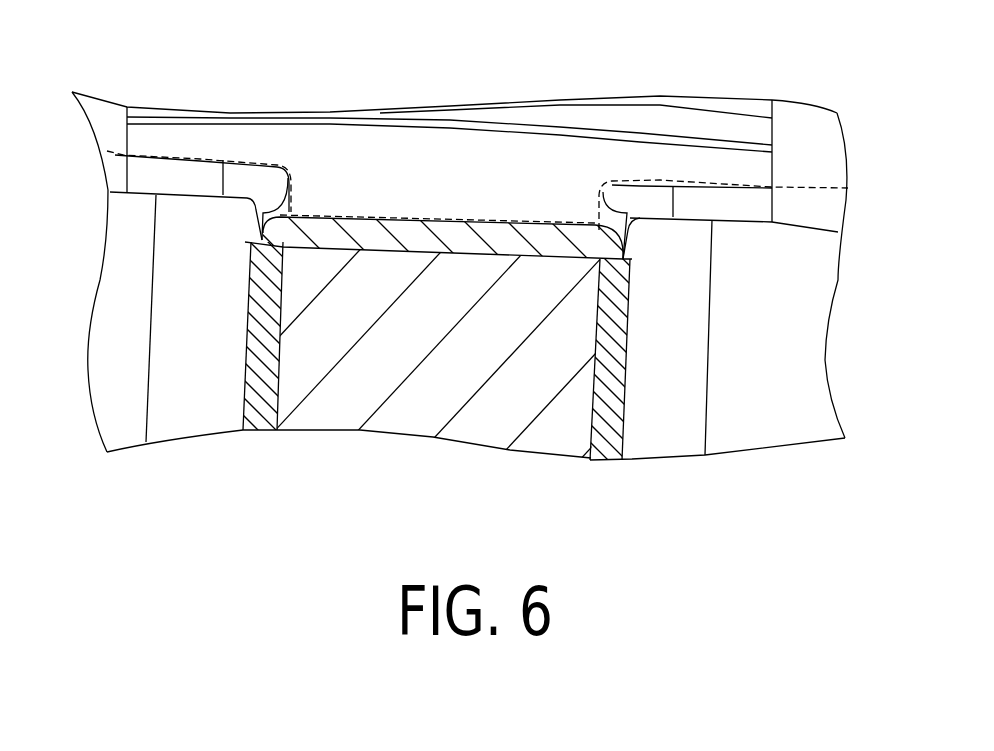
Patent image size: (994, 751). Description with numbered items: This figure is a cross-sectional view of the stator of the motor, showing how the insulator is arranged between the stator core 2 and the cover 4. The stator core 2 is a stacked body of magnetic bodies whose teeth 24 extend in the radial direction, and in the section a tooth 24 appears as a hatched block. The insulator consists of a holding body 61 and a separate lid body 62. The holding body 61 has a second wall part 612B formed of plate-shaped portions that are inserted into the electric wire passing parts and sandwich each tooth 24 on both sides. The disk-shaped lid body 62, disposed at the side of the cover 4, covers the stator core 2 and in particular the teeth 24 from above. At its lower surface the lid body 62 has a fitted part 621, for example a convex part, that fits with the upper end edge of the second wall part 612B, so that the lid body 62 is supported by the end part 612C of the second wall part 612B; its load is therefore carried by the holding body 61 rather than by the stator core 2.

The stator core 2 is at (373, 277).
The cover 4 is at (646, 120).
The teeth 24 is at (403, 413).
The holding body 61 is at (205, 405).
The lid body 62 is at (233, 140).
The fitted part 621 is at (470, 223).
The second wall part 612B is at (168, 418).
The end part of the second wall part 612C is at (255, 228).